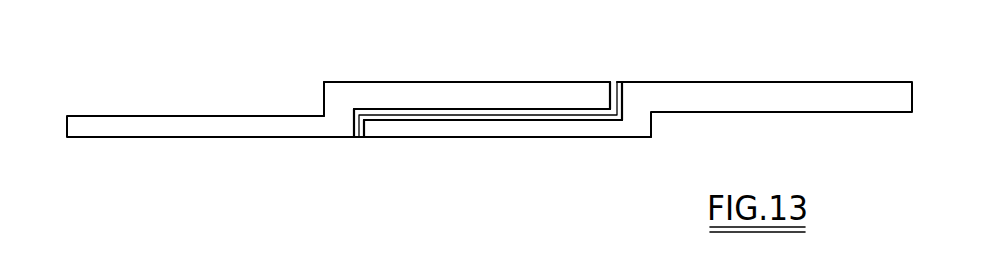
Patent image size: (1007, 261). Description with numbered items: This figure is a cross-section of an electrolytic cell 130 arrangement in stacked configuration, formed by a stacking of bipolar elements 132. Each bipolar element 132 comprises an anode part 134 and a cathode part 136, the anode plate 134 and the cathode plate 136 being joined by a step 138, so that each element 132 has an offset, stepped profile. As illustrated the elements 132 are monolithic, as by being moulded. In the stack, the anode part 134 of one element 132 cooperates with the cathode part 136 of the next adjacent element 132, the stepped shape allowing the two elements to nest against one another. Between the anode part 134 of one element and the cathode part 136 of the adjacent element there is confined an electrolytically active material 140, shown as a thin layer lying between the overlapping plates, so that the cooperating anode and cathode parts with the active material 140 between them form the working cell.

The electrolytic cell 130 is at (480, 73).
The bipolar element 132 is at (295, 128).
The anode part 134 is at (170, 130).
The cathode part 136 is at (508, 93).
The step 138 is at (337, 116).
The electrolytically active material 140 is at (385, 110).